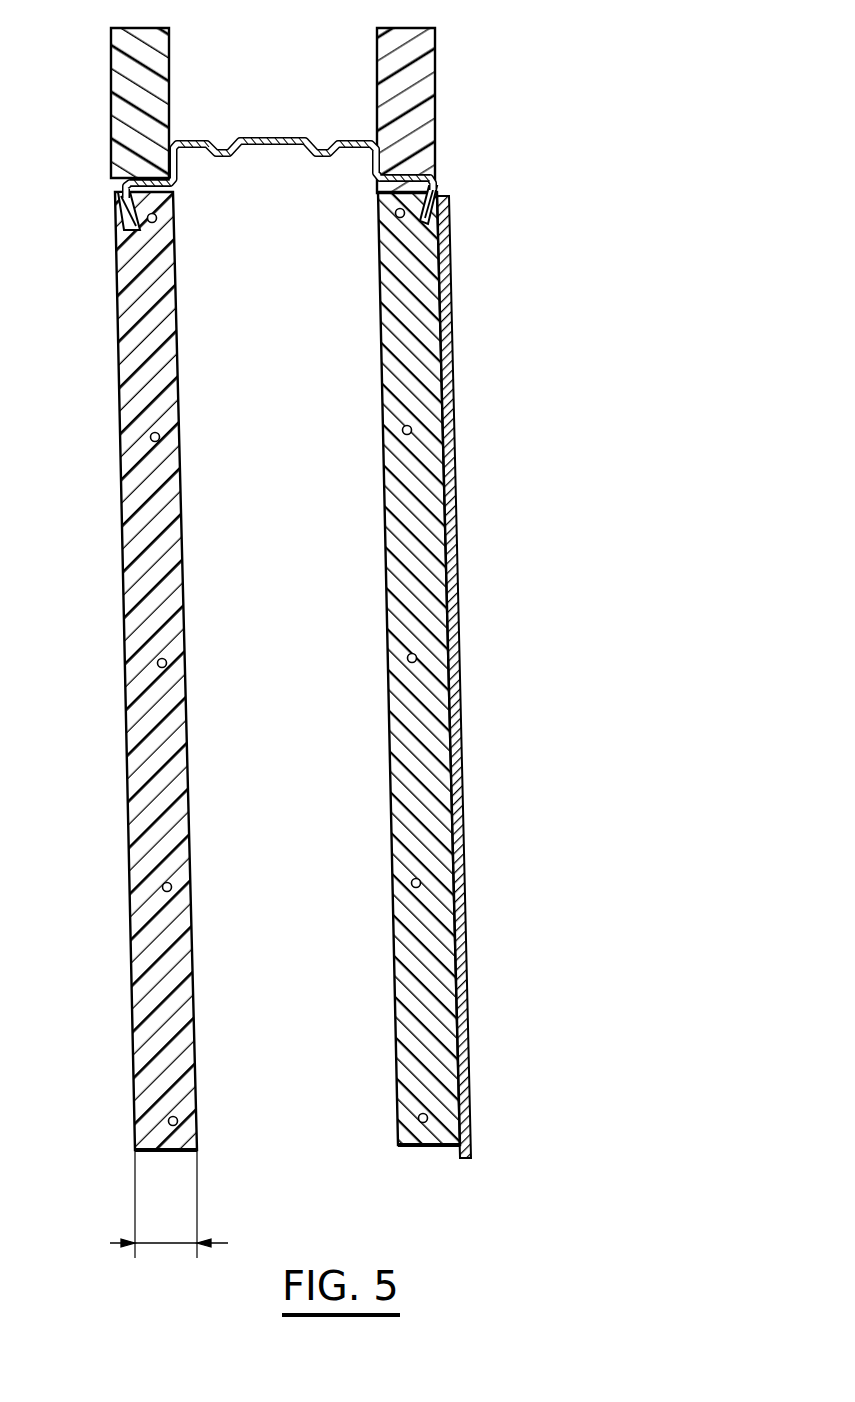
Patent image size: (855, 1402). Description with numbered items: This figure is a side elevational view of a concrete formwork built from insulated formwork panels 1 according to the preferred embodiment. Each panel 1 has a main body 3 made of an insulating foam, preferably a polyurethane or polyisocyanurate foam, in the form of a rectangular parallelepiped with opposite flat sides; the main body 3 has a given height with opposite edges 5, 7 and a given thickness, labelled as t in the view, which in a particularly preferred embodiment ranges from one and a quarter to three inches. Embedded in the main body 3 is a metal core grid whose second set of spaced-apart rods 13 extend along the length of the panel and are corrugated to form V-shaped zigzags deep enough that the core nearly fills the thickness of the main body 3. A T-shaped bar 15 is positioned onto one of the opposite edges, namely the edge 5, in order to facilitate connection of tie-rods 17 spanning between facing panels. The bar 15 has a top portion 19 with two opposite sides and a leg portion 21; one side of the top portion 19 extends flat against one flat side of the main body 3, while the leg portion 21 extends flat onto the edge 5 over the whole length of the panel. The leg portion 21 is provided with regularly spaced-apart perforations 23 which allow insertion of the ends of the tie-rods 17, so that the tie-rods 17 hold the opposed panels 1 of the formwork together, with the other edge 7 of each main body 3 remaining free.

The insulated formwork panel 1 is at (285, 631).
The main body 3 is at (125, 302).
The edge 5 is at (171, 188).
The edge 7 is at (158, 1152).
The rods of the second set 13 is at (172, 250).
The T-shaped bar 15 is at (100, 165).
The tie-rods 17 is at (279, 101).
The top portion 19 is at (115, 220).
The leg portion 21 is at (158, 206).
The perforations 23 is at (440, 180).